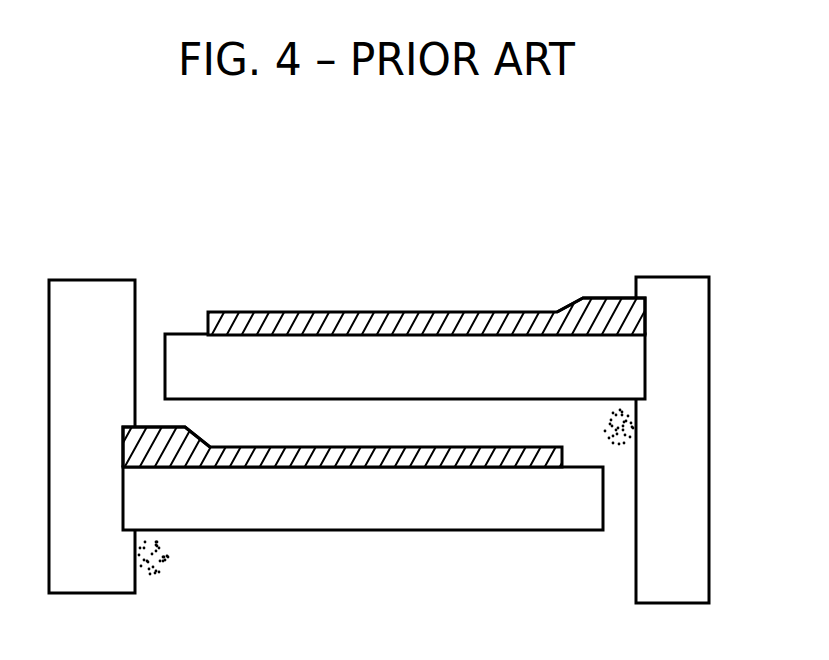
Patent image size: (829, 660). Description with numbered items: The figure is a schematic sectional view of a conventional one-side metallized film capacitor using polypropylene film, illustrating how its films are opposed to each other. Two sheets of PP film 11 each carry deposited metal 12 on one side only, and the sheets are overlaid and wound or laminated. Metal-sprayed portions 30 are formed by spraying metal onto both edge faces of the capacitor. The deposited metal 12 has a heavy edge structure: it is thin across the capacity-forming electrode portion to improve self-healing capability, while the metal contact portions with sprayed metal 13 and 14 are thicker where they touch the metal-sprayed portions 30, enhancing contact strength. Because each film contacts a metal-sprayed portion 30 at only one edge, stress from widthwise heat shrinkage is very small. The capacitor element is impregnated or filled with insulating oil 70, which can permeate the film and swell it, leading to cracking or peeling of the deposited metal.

The PP film 11 is at (413, 497).
The deposited metal 12 is at (530, 457).
The metal contact portion with sprayed metal 13 is at (610, 313).
The metal contact portion with sprayed metal 14 is at (157, 445).
The metal-sprayed portion 30 is at (65, 358).
The insulating oil 70 is at (155, 567).